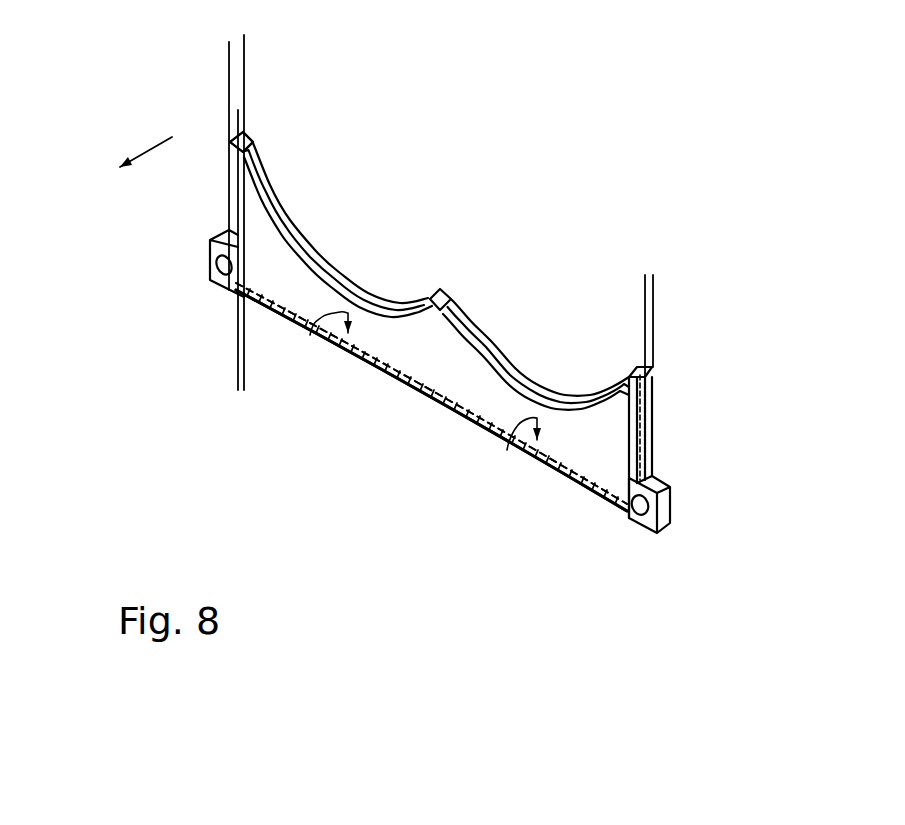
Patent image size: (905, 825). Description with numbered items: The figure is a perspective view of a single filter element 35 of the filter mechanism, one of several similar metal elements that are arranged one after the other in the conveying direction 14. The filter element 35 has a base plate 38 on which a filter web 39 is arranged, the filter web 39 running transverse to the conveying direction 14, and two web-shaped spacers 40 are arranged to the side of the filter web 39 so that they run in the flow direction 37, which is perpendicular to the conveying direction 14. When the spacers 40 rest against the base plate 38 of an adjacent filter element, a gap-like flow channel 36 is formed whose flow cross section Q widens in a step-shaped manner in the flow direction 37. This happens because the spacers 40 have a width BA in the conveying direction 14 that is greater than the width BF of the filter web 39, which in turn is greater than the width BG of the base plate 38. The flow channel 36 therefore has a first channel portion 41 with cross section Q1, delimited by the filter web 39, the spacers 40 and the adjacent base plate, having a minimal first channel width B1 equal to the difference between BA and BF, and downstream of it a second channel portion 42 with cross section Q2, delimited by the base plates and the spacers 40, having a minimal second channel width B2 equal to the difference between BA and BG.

The conveying direction 14 is at (150, 155).
The filter element 35 is at (250, 131).
The flow channel 36 is at (490, 407).
The flow direction 37 is at (310, 335).
The base plate 38 is at (590, 473).
The filter web 39 is at (368, 288).
The spacer 40 is at (229, 210).
The first channel portion 41 is at (310, 262).
The second channel portion 42 is at (413, 362).
The flow cross section Q is at (303, 338).
The cross section of the first channel portion Q1 is at (483, 357).
The cross section of the second channel portion Q2 is at (442, 413).
The width of the spacers BA is at (243, 36).
The first channel width B1 is at (297, 77).
The second channel width B2 is at (245, 378).
The width of the filter web BF is at (433, 308).
The width of the base plate BG is at (653, 273).